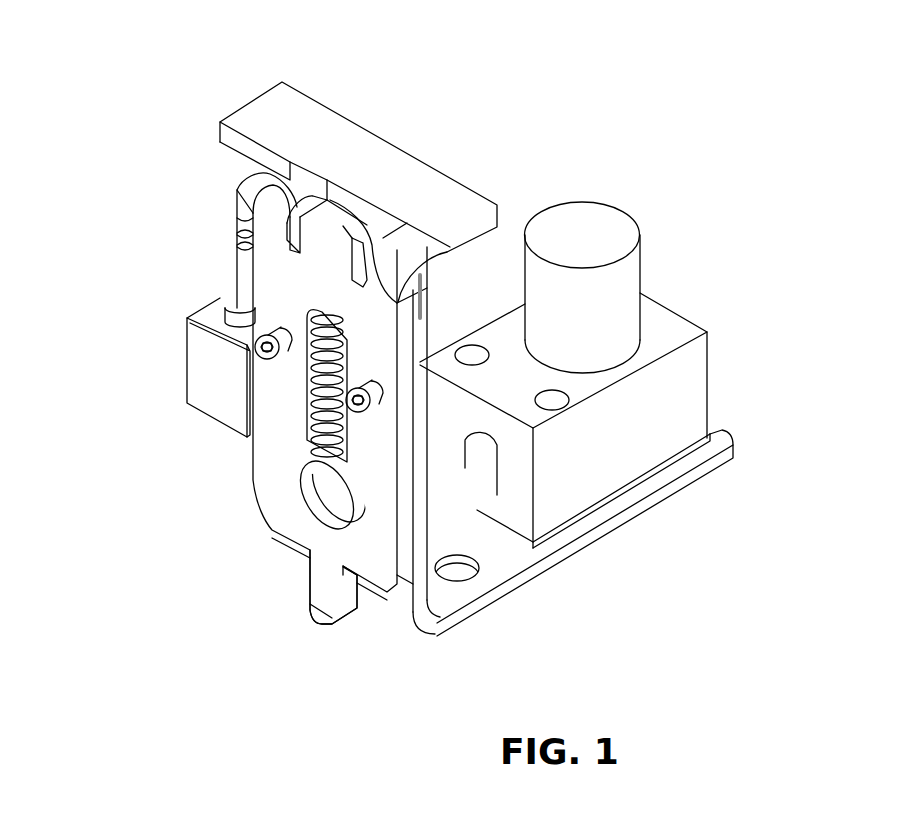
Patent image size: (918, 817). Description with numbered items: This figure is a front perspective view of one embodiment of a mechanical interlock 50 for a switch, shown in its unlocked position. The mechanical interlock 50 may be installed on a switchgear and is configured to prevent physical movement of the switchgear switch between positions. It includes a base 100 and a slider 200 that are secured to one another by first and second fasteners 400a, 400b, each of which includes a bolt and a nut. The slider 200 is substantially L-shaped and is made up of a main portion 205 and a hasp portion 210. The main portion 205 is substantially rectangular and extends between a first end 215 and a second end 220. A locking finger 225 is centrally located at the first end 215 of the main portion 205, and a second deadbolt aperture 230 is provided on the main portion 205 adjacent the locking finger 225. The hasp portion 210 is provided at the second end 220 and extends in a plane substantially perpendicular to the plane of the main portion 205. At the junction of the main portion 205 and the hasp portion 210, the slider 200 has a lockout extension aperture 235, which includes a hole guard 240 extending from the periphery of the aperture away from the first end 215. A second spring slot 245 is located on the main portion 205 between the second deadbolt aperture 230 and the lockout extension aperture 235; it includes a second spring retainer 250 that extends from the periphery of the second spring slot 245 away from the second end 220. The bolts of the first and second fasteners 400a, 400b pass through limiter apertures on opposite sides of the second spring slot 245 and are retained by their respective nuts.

The mechanical interlock 50 is at (679, 88).
The base 100 is at (570, 557).
The slider 200 is at (222, 442).
The main portion 205 is at (278, 422).
The hasp portion 210 is at (371, 164).
The first end 215 is at (383, 563).
The second end 220 is at (284, 194).
The locking finger 225 is at (328, 608).
The second deadbolt aperture 230 is at (328, 487).
The lockout extension aperture 235 is at (382, 237).
The hole guard 240 is at (325, 240).
The second spring slot 245 is at (307, 327).
The second spring retainer 250 is at (320, 323).
The first fastener 400a is at (372, 402).
The second fastener 400b is at (257, 340).